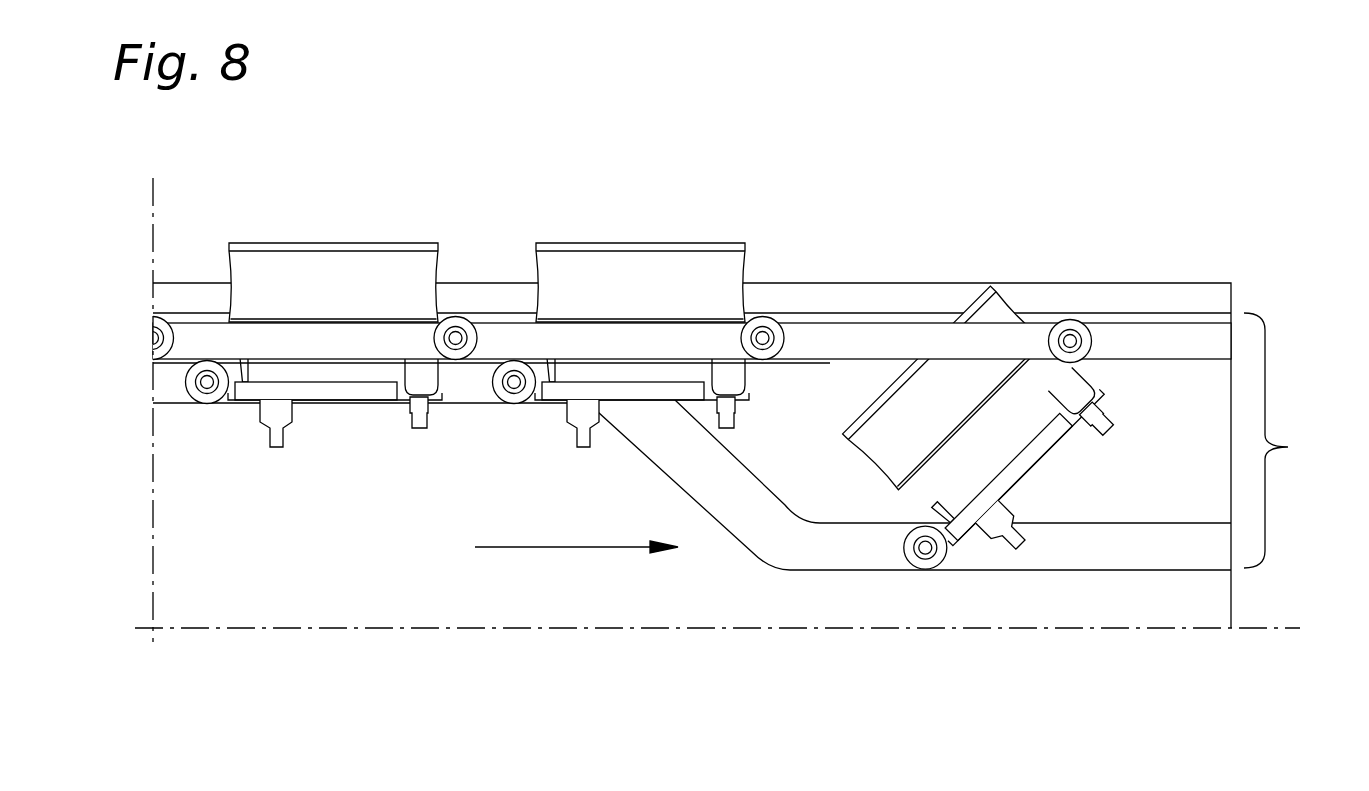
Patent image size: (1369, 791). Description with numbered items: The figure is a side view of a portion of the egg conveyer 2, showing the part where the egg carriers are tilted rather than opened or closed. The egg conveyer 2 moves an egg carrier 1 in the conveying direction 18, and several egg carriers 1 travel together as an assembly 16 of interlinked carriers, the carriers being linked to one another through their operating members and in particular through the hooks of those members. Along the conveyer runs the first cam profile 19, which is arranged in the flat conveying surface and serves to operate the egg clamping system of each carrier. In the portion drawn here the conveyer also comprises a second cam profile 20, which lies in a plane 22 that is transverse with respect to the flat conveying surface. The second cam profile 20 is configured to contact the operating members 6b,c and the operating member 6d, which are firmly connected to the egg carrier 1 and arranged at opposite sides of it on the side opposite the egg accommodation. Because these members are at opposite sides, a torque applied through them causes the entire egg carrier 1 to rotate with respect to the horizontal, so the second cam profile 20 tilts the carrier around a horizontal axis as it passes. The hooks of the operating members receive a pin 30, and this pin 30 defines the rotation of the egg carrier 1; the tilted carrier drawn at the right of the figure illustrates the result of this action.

The egg carrier 1 is at (550, 412).
The egg conveyer 2 is at (853, 652).
The operating members 6b,c is at (1105, 343).
The operating member 6d is at (903, 524).
The assembly of interlinked egg carriers 16 is at (140, 337).
The conveying direction 18 is at (576, 535).
The first cam profile 19 is at (790, 210).
The second cam profile 20 is at (1288, 447).
The plane 22 is at (1100, 611).
The pin 30 is at (1073, 340).